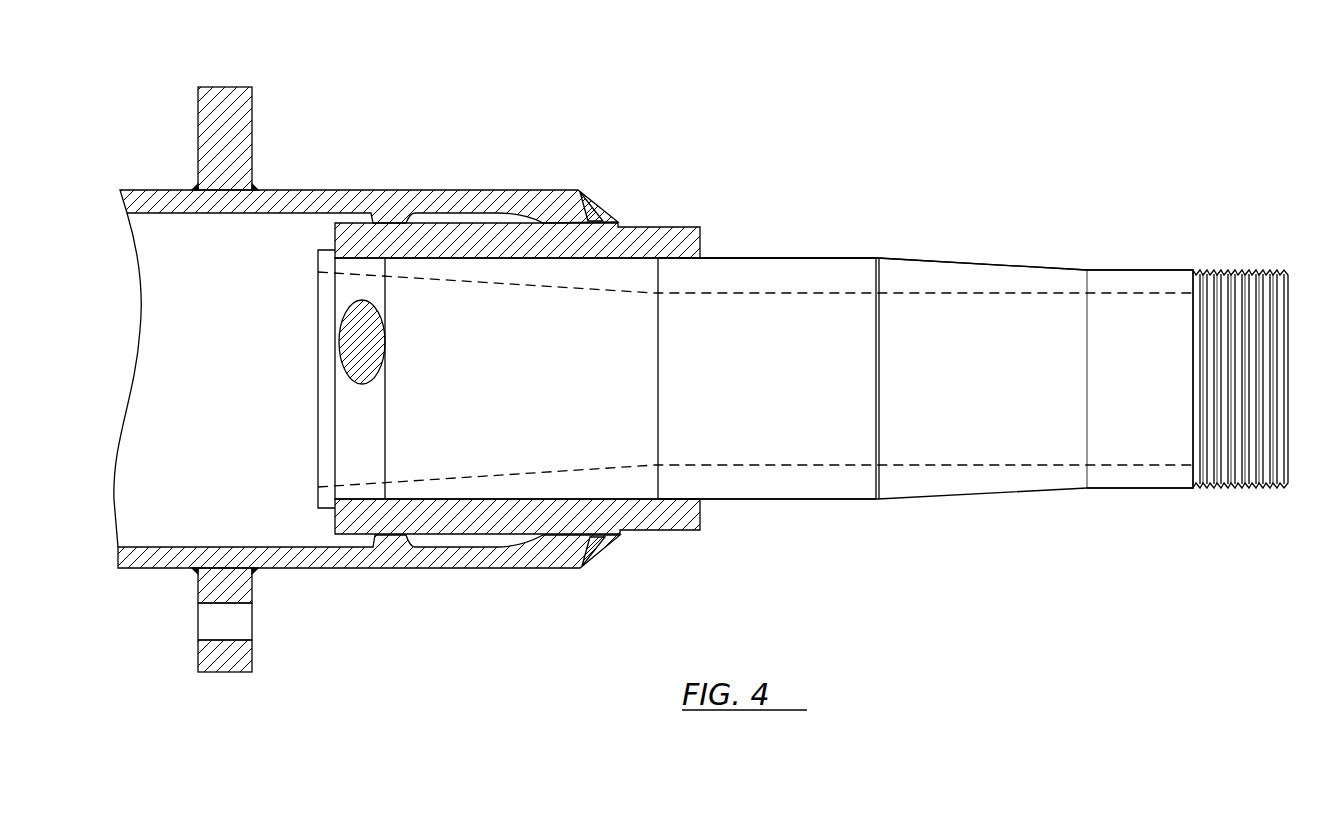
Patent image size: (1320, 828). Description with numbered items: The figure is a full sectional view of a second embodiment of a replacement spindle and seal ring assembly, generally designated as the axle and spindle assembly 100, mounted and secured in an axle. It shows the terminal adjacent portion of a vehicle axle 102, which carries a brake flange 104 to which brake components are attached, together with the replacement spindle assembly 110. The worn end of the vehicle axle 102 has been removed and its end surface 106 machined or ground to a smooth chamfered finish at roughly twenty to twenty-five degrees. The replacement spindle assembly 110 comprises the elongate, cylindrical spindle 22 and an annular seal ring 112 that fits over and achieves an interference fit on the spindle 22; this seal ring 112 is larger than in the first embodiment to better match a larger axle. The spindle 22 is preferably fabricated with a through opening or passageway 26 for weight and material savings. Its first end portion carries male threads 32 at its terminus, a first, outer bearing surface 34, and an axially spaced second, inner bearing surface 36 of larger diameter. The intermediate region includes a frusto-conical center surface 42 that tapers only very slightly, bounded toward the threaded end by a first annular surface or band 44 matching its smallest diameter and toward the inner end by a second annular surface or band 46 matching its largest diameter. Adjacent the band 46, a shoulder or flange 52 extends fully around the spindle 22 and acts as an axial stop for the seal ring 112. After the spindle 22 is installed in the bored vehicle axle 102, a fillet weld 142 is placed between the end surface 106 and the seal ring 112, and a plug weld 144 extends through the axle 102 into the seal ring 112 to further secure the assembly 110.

The axle and spindle assembly 100 is at (895, 165).
The vehicle axle 102 is at (343, 198).
The brake flange 104 is at (225, 110).
The end surface 106 is at (595, 205).
The replacement spindle assembly 110 is at (758, 239).
The annular seal ring 112 is at (674, 210).
The fillet weld 142 is at (593, 548).
The plug weld 144 is at (357, 338).
The shoulder or flange 52 is at (318, 460).
The second annular surface or band 46 is at (375, 432).
The frusto-conical center surface 42 is at (530, 394).
The first annular surface or band 44 is at (788, 394).
The second, inner bearing surface 36 is at (853, 500).
The through opening or passageway 26 is at (1025, 379).
The first, outer bearing surface 34 is at (1120, 490).
The male threads 32 is at (1235, 491).
The spindle 22 is at (1123, 247).